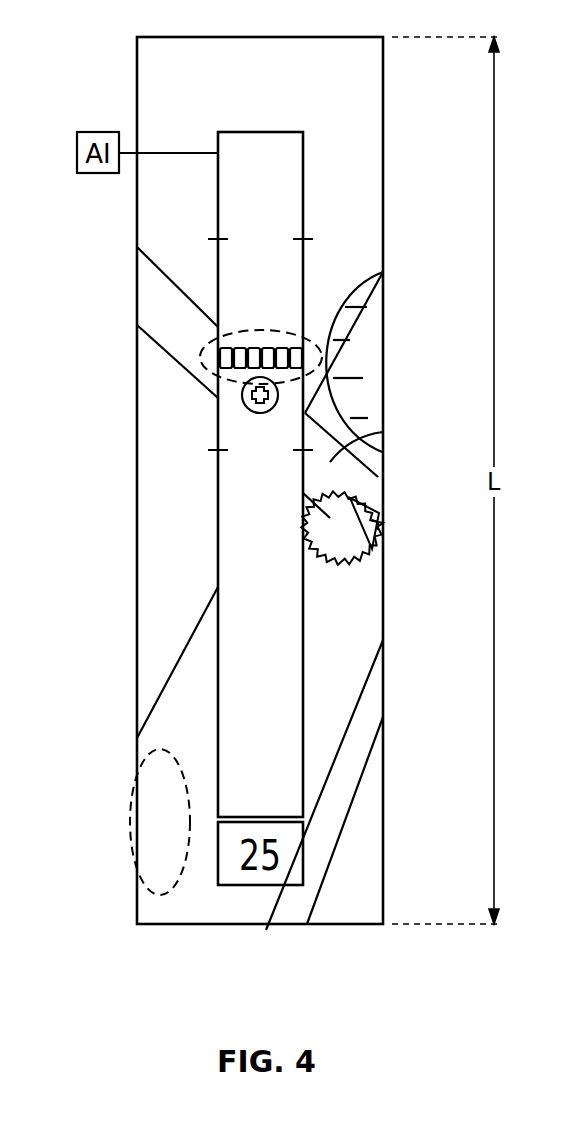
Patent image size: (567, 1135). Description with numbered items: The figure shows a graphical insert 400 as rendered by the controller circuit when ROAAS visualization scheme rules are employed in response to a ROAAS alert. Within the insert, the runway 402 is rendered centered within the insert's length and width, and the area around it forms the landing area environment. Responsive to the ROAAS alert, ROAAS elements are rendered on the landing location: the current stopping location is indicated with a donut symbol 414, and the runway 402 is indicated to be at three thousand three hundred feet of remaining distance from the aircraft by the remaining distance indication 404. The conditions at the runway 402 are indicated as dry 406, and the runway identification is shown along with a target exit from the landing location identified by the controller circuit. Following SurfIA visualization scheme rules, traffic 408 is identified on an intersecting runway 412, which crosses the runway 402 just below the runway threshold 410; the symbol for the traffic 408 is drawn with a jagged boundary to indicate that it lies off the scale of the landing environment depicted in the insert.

The graphical insert 400 is at (207, 37).
The runway 402 is at (305, 778).
The remaining distance indication 404 is at (300, 903).
The dry condition indication 406 is at (130, 815).
The traffic 408 is at (370, 493).
The runway threshold 410 is at (202, 363).
The intersecting runway 412 is at (380, 433).
The donut symbol 414 is at (242, 395).